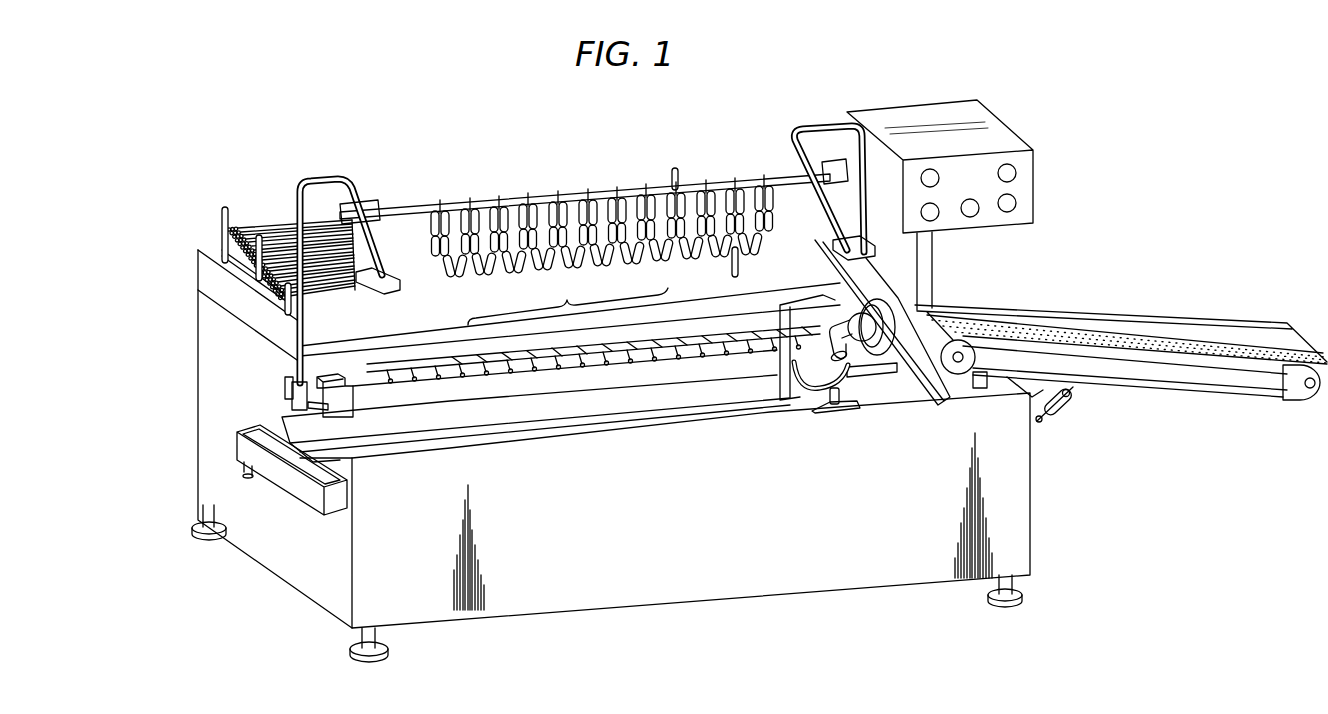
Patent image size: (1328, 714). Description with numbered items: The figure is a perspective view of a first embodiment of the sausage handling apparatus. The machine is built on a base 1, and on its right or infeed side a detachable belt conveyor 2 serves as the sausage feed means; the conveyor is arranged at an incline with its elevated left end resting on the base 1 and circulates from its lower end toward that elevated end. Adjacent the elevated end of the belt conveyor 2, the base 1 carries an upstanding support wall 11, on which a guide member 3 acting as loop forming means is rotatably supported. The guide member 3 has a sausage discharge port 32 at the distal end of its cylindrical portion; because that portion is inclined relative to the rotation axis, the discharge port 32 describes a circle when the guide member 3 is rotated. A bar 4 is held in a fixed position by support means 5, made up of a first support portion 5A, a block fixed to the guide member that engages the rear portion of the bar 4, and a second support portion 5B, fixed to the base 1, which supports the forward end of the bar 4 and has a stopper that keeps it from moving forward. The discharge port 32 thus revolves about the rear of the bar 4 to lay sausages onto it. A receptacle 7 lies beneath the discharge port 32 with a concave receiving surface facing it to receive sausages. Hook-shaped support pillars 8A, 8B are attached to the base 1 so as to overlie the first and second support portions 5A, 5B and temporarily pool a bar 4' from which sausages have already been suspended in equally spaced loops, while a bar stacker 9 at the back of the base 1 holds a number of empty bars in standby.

The base 1 is at (670, 575).
The belt conveyor 2 is at (1183, 334).
The guide member 3 is at (862, 324).
The bar 4 is at (561, 385).
The bar 4' is at (585, 215).
The support means 5 is at (602, 250).
The first support portion 5A is at (790, 322).
The second support portion 5B is at (345, 392).
The receptacle 7 is at (817, 370).
The hook-shaped support pillar 8A is at (864, 158).
The hook-shaped support pillar 8B is at (298, 188).
The bar stacker 9 is at (255, 272).
The support wall 11 is at (910, 398).
The sausage discharge port 32 is at (840, 405).